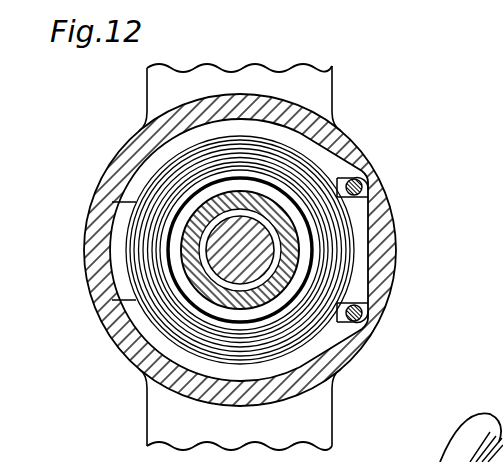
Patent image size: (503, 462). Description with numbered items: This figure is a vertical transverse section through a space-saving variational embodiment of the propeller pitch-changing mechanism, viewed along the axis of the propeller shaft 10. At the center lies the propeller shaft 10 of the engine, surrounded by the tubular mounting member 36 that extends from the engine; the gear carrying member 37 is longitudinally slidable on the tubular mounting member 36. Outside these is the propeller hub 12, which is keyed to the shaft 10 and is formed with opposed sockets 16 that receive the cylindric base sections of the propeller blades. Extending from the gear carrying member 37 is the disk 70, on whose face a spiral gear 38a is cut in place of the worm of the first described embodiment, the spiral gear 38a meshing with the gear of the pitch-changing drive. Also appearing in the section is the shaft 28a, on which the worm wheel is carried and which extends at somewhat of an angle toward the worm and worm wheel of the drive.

The propeller shaft 10 is at (258, 267).
The propeller hub 12 is at (104, 172).
The sockets 16 is at (302, 87).
The shaft 28a is at (363, 186).
The tubular mounting member 36 is at (187, 247).
The gear carrying member 37 is at (298, 278).
The spiral gear 38a is at (307, 175).
The disk 70 is at (357, 240).